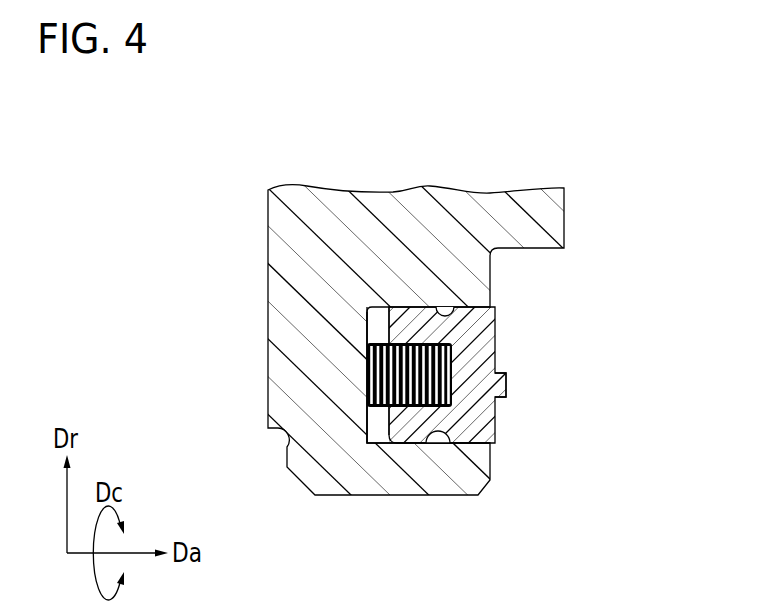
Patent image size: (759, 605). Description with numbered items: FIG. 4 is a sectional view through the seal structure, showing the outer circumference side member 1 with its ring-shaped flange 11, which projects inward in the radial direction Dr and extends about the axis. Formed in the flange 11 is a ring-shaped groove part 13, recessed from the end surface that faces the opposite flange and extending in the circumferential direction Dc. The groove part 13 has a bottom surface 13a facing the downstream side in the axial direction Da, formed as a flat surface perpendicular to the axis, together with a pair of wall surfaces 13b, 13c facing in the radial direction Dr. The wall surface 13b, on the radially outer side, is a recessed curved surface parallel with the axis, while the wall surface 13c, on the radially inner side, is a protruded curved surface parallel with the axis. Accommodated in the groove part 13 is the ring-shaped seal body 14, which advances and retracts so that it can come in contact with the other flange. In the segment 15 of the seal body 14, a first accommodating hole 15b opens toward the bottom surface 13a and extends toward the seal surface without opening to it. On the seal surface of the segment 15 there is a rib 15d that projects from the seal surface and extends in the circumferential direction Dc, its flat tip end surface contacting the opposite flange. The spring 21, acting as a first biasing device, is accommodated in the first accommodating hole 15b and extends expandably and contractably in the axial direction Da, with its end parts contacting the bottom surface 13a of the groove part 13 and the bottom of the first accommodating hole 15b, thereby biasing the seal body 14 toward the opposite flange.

The outer circumference side member 1 is at (379, 285).
The flange 11 is at (395, 198).
The groove part 13 is at (472, 432).
The bottom surface 13a is at (368, 415).
The wall surface 13b is at (438, 317).
The wall surface 13c is at (428, 445).
The seal body 14 is at (471, 350).
The segment 15 is at (505, 322).
The first accommodating hole 15b is at (402, 347).
The rib 15d is at (507, 385).
The spring 21 is at (388, 381).